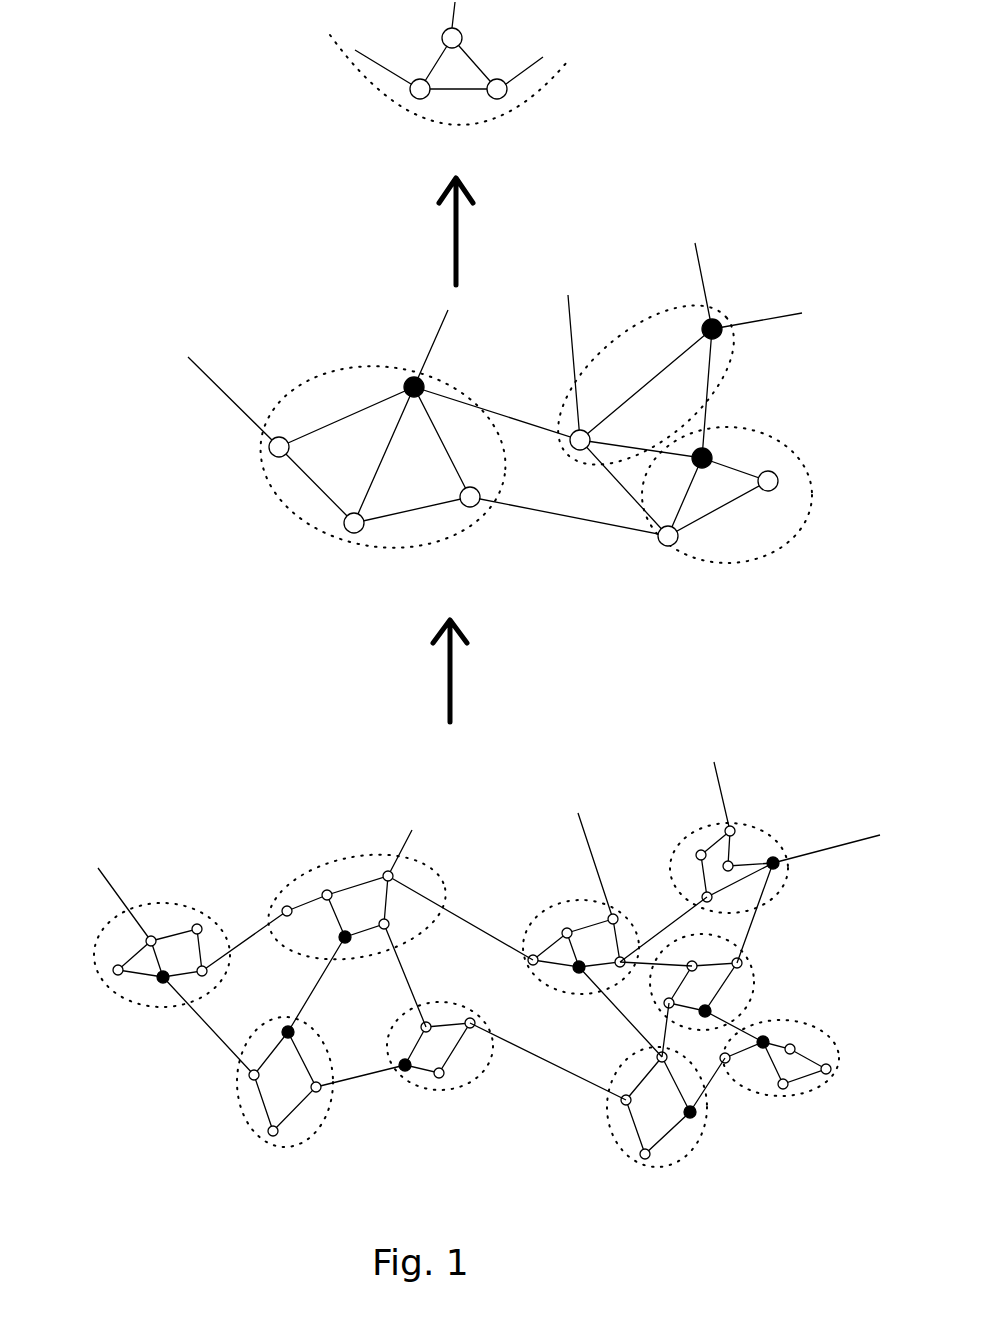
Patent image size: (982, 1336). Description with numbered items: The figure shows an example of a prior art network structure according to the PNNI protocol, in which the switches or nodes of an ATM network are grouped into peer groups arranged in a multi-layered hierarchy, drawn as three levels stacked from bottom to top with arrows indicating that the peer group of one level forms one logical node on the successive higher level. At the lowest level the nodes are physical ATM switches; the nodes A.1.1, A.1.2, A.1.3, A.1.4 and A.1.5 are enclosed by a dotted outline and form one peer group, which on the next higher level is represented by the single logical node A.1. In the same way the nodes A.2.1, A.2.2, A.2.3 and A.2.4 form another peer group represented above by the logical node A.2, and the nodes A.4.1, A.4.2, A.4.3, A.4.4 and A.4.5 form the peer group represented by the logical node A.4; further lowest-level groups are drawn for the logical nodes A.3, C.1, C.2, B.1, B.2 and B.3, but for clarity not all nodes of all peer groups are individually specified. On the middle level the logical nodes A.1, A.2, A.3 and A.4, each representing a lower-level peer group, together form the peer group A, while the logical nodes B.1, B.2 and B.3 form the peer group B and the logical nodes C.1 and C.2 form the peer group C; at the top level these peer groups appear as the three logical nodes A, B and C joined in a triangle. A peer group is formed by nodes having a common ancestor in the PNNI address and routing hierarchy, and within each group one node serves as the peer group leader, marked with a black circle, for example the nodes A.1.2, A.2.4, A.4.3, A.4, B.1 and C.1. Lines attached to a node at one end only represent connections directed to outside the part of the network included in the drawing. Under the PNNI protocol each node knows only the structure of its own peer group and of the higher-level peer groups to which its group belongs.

The peer group A is at (415, 103).
The peer group B is at (500, 103).
The peer group C is at (463, 30).
The logical node A.1 is at (278, 432).
The logical node A.2 is at (352, 535).
The logical node A.3 is at (470, 510).
The logical node A.4 is at (415, 372).
The logical node B.1 is at (712, 455).
The logical node B.2 is at (665, 548).
The logical node B.3 is at (770, 493).
The logical node C.1 is at (720, 318).
The logical node C.2 is at (583, 428).
The node A.1.1 is at (113, 975).
The node A.1.2 is at (163, 983).
The node A.1.3 is at (208, 971).
The node A.1.4 is at (217, 917).
The node A.1.5 is at (145, 939).
The node A.2.1 is at (248, 1075).
The node A.2.2 is at (265, 1132).
The node A.2.3 is at (320, 1095).
The node A.2.4 is at (298, 1030).
The node A.4.1 is at (283, 906).
The node A.4.2 is at (323, 892).
The node A.4.3 is at (338, 938).
The node A.4.4 is at (388, 922).
The node A.4.5 is at (385, 870).